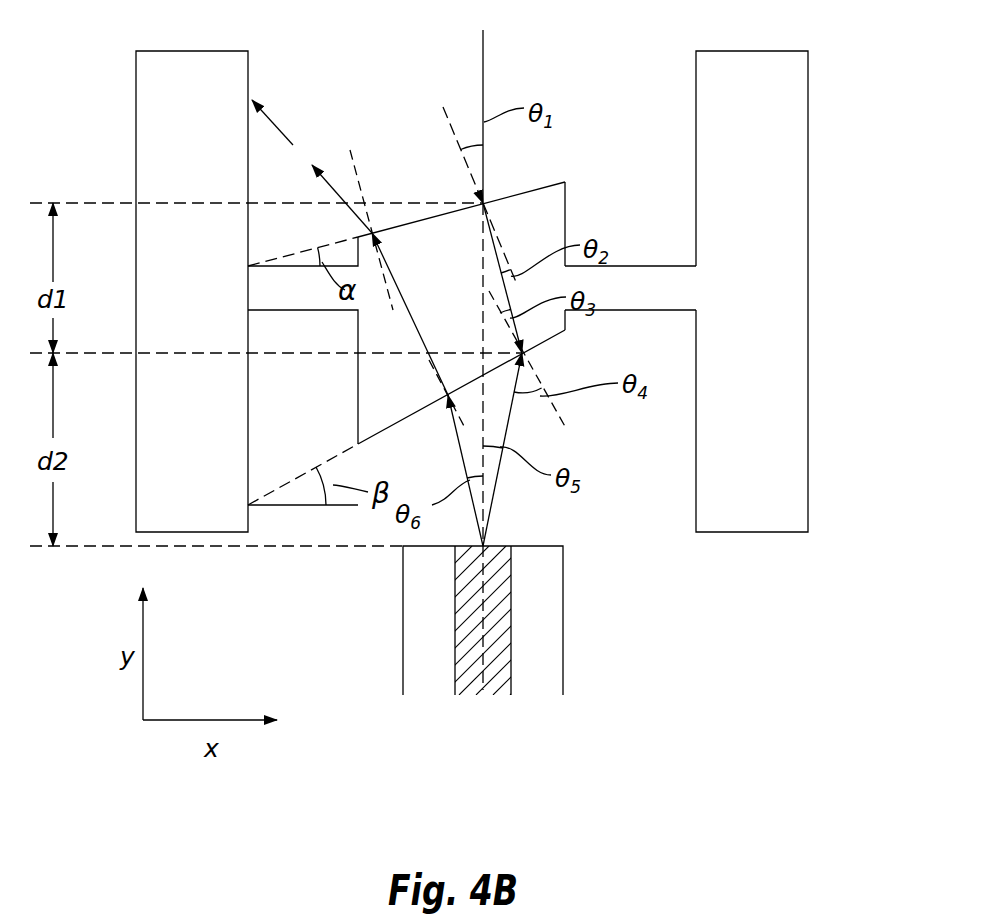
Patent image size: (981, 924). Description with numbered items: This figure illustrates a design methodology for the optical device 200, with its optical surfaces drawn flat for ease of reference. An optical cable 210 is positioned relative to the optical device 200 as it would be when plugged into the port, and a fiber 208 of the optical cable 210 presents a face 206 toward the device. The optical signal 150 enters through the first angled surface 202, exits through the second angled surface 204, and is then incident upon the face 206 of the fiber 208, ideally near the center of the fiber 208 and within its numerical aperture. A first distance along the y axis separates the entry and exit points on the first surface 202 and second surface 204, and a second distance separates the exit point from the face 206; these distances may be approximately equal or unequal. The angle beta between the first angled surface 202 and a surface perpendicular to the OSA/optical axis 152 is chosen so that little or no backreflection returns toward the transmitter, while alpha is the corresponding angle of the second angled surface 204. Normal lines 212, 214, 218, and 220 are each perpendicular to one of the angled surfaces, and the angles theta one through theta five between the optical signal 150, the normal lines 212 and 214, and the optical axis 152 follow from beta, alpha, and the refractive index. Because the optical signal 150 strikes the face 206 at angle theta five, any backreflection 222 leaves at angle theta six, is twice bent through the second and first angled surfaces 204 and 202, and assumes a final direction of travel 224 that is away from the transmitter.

The optical signal 150 is at (484, 70).
The OSA/optical axis 152 is at (481, 272).
The optical device 200 is at (441, 328).
The first angled surface 202 is at (540, 183).
The second angled surface 204 is at (555, 338).
The face of the fiber 206 is at (520, 546).
The fiber 208 is at (455, 625).
The optical cable 210 is at (563, 628).
The normal line 212 is at (452, 128).
The normal line 214 is at (566, 431).
The normal line 218 is at (432, 374).
The normal line 220 is at (365, 196).
The backreflection 222 is at (456, 430).
The final direction of travel 224 is at (272, 136).